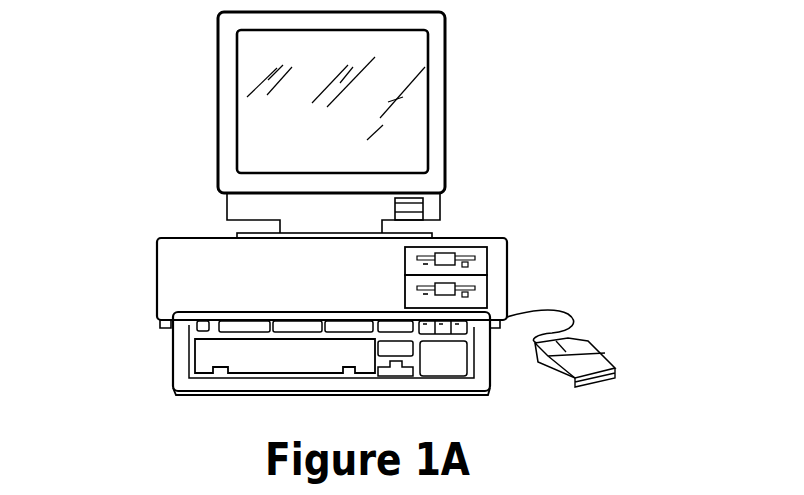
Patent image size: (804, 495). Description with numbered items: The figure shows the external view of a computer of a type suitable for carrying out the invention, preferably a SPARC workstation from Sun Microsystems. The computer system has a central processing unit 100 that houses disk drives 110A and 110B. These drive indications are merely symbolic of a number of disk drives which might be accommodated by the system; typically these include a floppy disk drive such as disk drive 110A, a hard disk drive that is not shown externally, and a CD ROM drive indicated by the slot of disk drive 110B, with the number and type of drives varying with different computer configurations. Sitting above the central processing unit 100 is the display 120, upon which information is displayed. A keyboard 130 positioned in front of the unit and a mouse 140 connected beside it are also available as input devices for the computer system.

The central processing unit 100 is at (273, 281).
The disk drive 110A is at (388, 262).
The disk drive 110B is at (388, 300).
The display 120 is at (458, 108).
The keyboard 130 is at (155, 370).
The mouse 140 is at (615, 356).